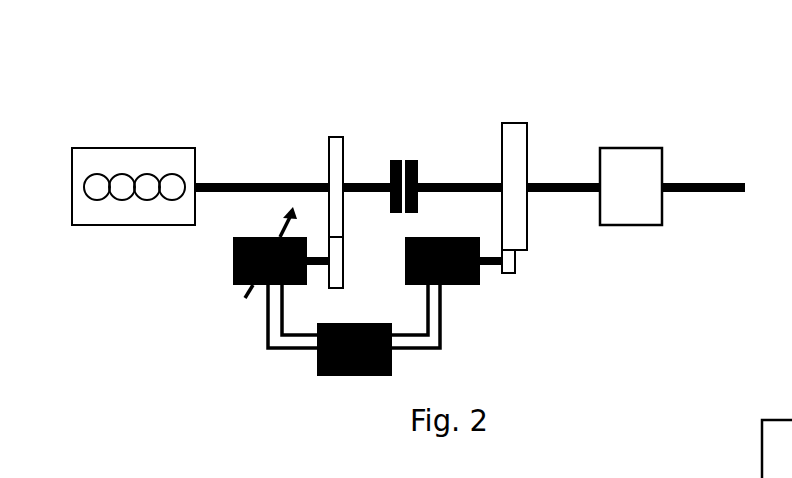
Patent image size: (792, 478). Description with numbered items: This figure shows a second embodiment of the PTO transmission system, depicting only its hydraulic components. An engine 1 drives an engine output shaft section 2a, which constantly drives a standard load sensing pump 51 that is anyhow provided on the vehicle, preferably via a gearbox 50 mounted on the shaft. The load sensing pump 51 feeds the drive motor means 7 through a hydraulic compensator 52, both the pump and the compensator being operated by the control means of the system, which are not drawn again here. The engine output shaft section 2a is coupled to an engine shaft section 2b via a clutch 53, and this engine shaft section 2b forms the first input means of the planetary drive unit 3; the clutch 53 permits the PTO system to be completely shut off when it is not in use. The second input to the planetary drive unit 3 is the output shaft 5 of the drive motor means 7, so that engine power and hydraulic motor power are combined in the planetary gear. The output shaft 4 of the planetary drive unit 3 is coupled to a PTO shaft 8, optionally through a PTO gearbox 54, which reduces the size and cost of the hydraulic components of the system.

The engine 1 is at (97, 228).
The engine output shaft section 2a is at (232, 183).
The engine shaft section 2b is at (433, 183).
The planetary drive unit 3 is at (514, 123).
The output shaft 4 is at (540, 183).
The output shaft 5 is at (489, 270).
The drive motor means 7 is at (475, 287).
The PTO shaft 8 is at (707, 193).
The gearbox 50 is at (333, 137).
The load sensing pump 51 is at (232, 266).
The hydraulic compensator 52 is at (328, 377).
The clutch 53 is at (397, 160).
The PTO gearbox 54 is at (625, 148).